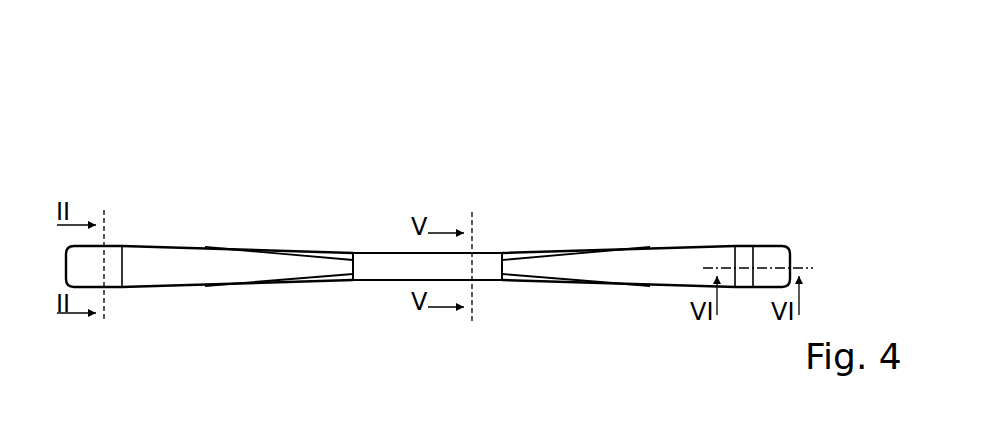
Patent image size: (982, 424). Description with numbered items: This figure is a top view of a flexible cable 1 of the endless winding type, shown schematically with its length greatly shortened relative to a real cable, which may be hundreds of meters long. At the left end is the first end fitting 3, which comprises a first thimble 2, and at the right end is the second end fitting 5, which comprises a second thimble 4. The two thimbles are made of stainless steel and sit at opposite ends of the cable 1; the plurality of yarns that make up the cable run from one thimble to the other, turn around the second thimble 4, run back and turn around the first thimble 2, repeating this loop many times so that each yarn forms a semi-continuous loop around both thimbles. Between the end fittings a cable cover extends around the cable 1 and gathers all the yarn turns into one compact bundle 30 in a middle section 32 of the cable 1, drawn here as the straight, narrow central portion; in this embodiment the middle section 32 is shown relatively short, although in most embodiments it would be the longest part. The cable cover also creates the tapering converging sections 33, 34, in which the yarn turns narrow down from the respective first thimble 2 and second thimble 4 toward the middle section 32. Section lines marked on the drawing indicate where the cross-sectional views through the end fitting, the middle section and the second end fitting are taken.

The cable 1 is at (261, 86).
The first thimble 2 is at (90, 203).
The first end fitting 3 is at (149, 138).
The second thimble 4 is at (745, 216).
The second end fitting 5 is at (651, 148).
The compact bundle 30 is at (415, 263).
The middle section 32 is at (366, 220).
The converging section 33 is at (210, 216).
The converging section 34 is at (604, 210).